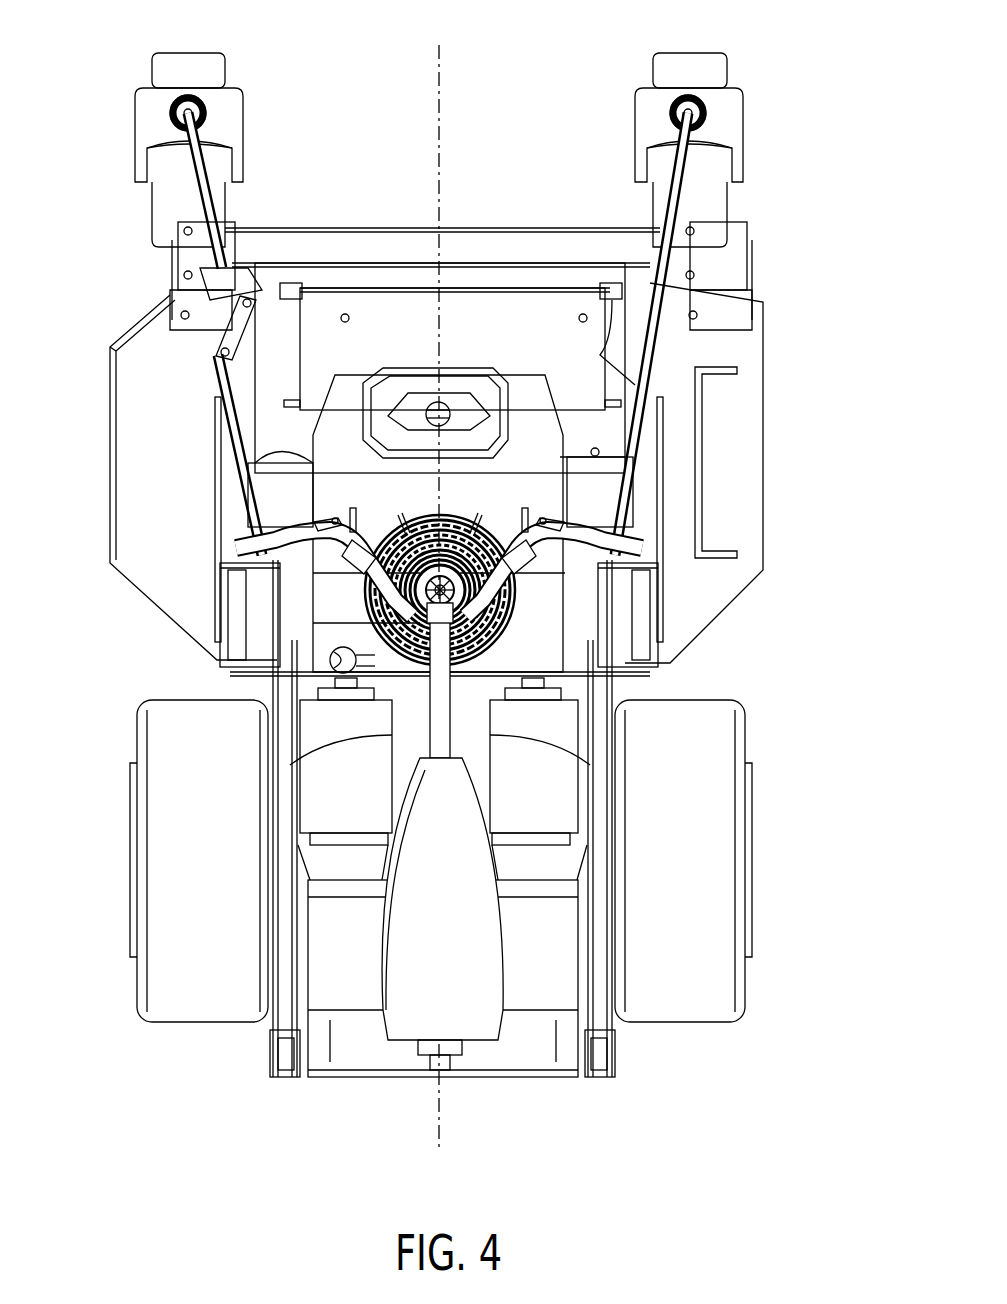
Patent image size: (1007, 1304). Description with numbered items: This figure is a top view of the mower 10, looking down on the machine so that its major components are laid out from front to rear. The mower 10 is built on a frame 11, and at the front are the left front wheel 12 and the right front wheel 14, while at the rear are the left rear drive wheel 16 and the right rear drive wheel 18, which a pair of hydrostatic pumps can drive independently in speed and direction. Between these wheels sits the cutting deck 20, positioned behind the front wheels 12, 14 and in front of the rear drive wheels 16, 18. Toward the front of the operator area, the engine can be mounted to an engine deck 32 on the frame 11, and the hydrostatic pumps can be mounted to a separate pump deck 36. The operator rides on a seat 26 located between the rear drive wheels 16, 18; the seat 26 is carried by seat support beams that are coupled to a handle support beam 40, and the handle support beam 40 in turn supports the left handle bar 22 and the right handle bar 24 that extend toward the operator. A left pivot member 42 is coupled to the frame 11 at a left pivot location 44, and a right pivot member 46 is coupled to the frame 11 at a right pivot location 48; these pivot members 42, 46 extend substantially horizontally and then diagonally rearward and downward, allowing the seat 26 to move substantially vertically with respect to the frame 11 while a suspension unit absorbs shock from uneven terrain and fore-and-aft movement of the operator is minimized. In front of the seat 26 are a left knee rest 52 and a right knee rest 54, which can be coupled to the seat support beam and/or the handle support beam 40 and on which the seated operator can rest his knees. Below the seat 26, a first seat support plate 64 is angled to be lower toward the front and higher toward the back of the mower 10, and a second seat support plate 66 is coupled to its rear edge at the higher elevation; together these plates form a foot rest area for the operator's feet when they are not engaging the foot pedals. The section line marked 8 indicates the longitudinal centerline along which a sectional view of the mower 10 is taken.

The section line 8 is at (440, 47).
The mower 10 is at (748, 40).
The frame 11 is at (677, 195).
The left front wheel 12 is at (188, 60).
The right front wheel 14 is at (682, 60).
The left rear drive wheel 16 is at (165, 808).
The right rear drive wheel 18 is at (695, 995).
The cutting deck 20 is at (147, 340).
The left handle bar 22 is at (248, 548).
The right handle bar 24 is at (630, 548).
The seat 26 is at (472, 1010).
The engine deck 32 is at (592, 585).
The pump deck 36 is at (595, 690).
The handle support beam 40 is at (285, 778).
The left pivot member 42 is at (278, 688).
The left pivot location 44 is at (255, 590).
The right pivot member 46 is at (598, 663).
The right pivot location 48 is at (580, 588).
The left knee rest 52 is at (330, 805).
The right knee rest 54 is at (550, 770).
The first seat support plate 64 is at (553, 1058).
The second seat support plate 66 is at (345, 1045).